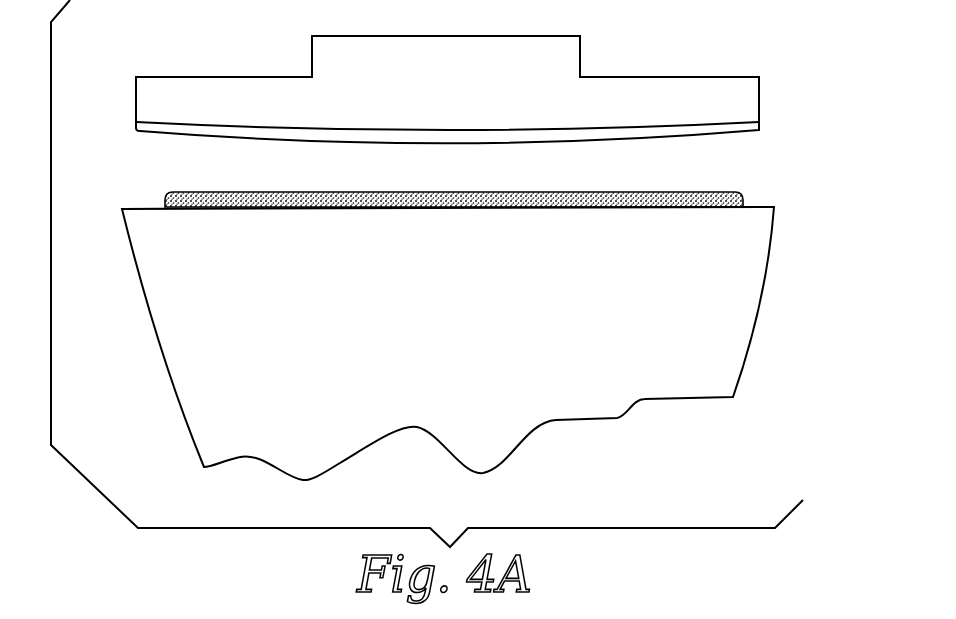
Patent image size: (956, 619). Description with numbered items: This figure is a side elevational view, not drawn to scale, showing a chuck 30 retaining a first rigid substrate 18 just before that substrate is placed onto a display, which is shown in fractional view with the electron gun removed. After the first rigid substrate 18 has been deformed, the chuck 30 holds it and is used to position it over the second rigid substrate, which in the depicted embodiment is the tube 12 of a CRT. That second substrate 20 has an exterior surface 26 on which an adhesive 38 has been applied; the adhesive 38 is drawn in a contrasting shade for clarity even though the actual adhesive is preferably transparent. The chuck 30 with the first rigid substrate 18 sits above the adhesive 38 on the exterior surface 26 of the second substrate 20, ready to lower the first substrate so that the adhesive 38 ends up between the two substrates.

The tube 12 is at (748, 290).
The first rigid substrate 18 is at (152, 133).
The second substrate 20 is at (465, 324).
The exterior surface 26 is at (762, 206).
The chuck 30 is at (625, 88).
The adhesive 38 is at (440, 195).